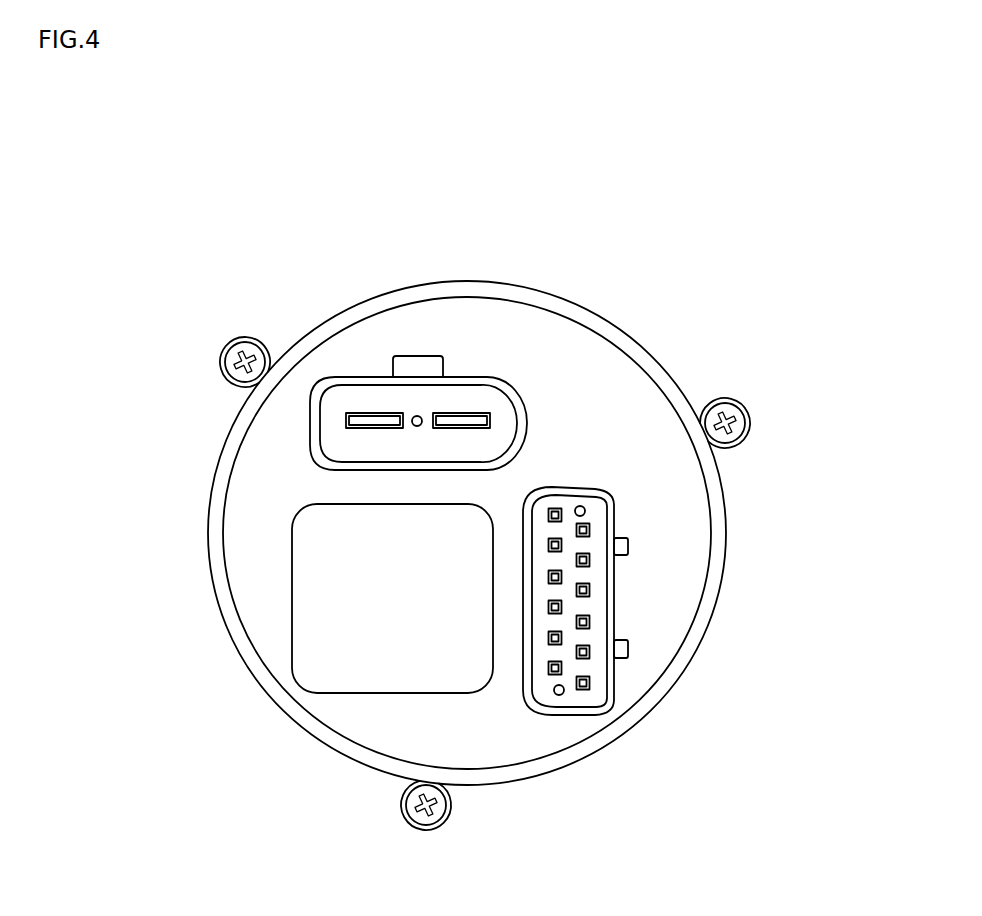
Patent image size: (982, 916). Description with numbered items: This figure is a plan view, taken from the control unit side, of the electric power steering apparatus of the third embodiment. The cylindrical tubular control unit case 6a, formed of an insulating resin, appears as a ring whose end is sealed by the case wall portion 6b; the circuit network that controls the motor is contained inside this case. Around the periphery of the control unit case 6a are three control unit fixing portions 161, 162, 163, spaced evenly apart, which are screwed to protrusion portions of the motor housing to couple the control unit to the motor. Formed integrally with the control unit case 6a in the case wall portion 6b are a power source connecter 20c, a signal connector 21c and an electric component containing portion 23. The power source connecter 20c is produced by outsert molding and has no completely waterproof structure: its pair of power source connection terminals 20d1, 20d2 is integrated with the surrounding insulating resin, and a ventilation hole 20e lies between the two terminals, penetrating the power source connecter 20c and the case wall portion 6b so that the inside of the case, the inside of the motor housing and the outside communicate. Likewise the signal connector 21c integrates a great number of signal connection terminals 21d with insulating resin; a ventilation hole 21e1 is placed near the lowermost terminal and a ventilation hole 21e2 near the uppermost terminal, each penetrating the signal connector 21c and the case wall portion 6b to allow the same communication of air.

The control unit case 6a is at (600, 317).
The case wall portion 6b is at (266, 600).
The control unit fixing portion 161 is at (702, 402).
The control unit fixing portion 162 is at (398, 790).
The control unit fixing portion 163 is at (272, 350).
The power source connecter 20c is at (475, 377).
The ventilation hole 20e is at (410, 417).
The power source connection terminal 20d1 is at (350, 425).
The power source connection terminal 20d2 is at (490, 420).
The electric component containing portion 23 is at (338, 658).
The signal connector 21c is at (615, 688).
The signal connection terminals 21d is at (588, 592).
The ventilation hole 21e1 is at (560, 697).
The ventilation hole 21e2 is at (586, 511).